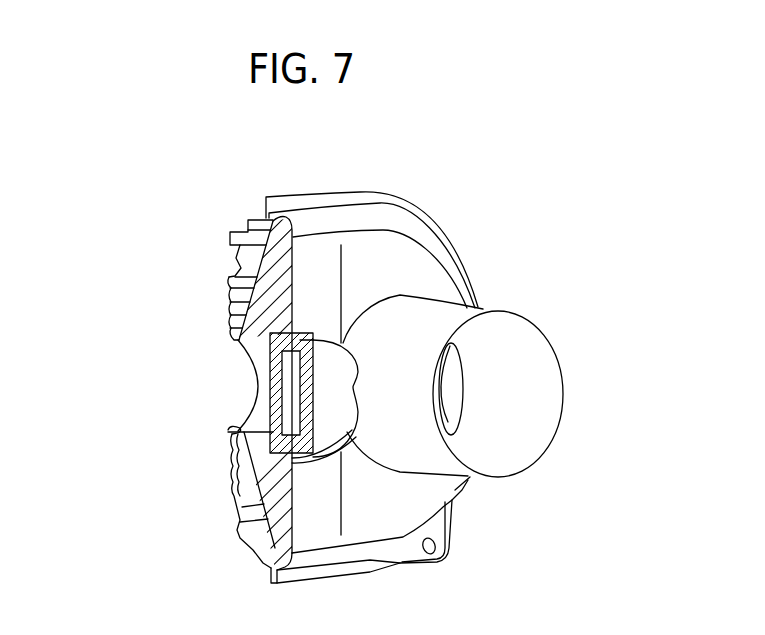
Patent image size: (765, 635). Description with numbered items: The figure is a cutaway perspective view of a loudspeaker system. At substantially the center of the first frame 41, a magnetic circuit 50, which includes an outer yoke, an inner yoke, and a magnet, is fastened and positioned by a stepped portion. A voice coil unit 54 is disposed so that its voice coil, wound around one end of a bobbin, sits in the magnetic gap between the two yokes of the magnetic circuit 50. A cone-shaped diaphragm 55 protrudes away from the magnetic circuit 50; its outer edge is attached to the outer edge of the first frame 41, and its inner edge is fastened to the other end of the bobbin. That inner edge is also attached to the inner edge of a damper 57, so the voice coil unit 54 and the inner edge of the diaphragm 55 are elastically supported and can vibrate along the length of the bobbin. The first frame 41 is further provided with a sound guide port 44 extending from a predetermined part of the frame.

The first frame 41 is at (365, 220).
The sound guide port 44 is at (545, 333).
The magnetic circuit 50 is at (270, 396).
The voice coil unit 54 is at (256, 449).
The diaphragm 55 is at (233, 308).
The damper 57 is at (232, 268).